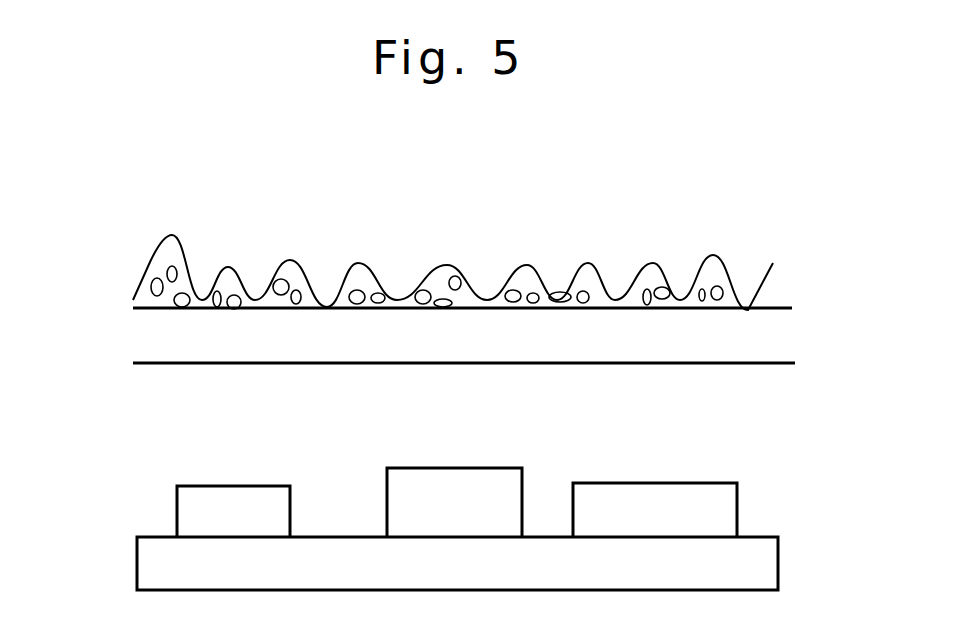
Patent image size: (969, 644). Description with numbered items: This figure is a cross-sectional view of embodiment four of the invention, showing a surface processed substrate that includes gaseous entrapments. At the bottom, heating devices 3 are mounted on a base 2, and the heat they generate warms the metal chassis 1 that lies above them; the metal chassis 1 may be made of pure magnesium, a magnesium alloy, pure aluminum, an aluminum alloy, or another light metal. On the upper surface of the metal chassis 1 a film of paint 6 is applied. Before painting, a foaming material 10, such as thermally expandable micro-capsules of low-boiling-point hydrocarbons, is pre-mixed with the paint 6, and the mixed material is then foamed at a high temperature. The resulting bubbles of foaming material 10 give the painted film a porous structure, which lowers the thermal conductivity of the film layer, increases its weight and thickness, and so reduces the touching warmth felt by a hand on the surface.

The metal chassis 1 is at (145, 346).
The base 2 is at (153, 569).
The heating device 3 is at (233, 485).
The paint 6 is at (148, 300).
The foaming material 10 is at (585, 297).